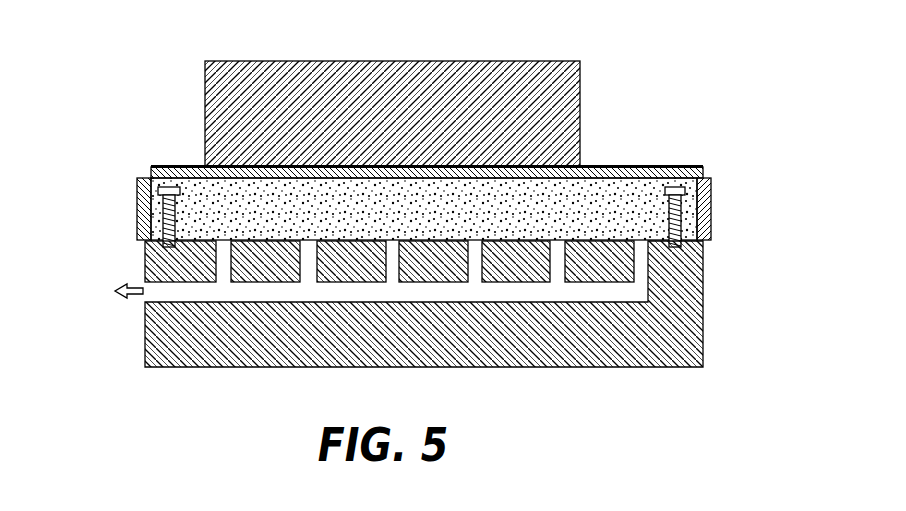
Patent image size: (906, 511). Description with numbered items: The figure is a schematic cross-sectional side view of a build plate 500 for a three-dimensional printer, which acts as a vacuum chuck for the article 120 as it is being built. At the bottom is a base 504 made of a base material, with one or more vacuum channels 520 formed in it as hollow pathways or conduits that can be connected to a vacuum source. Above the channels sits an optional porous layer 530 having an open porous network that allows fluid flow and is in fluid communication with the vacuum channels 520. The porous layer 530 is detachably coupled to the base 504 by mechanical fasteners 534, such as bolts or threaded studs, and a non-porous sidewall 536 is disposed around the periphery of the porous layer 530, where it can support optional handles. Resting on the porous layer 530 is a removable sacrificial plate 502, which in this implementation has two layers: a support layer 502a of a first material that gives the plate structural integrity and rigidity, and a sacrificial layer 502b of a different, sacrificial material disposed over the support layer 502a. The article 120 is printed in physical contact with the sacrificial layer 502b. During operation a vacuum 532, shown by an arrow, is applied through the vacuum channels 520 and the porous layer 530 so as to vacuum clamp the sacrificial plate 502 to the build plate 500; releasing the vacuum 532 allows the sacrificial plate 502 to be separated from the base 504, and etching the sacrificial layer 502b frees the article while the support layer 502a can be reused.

The article 120 is at (474, 37).
The build plate 500 is at (722, 70).
The sacrificial plate 502 is at (443, 190).
The support layer 502a is at (466, 201).
The sacrificial layer 502b is at (736, 138).
The base 504 is at (145, 343).
The vacuum channels 520 is at (145, 254).
The porous layer 530 is at (730, 240).
The vacuum 532 is at (118, 313).
The mechanical fasteners 534 is at (170, 186).
The non-porous sidewall 536 is at (137, 200).